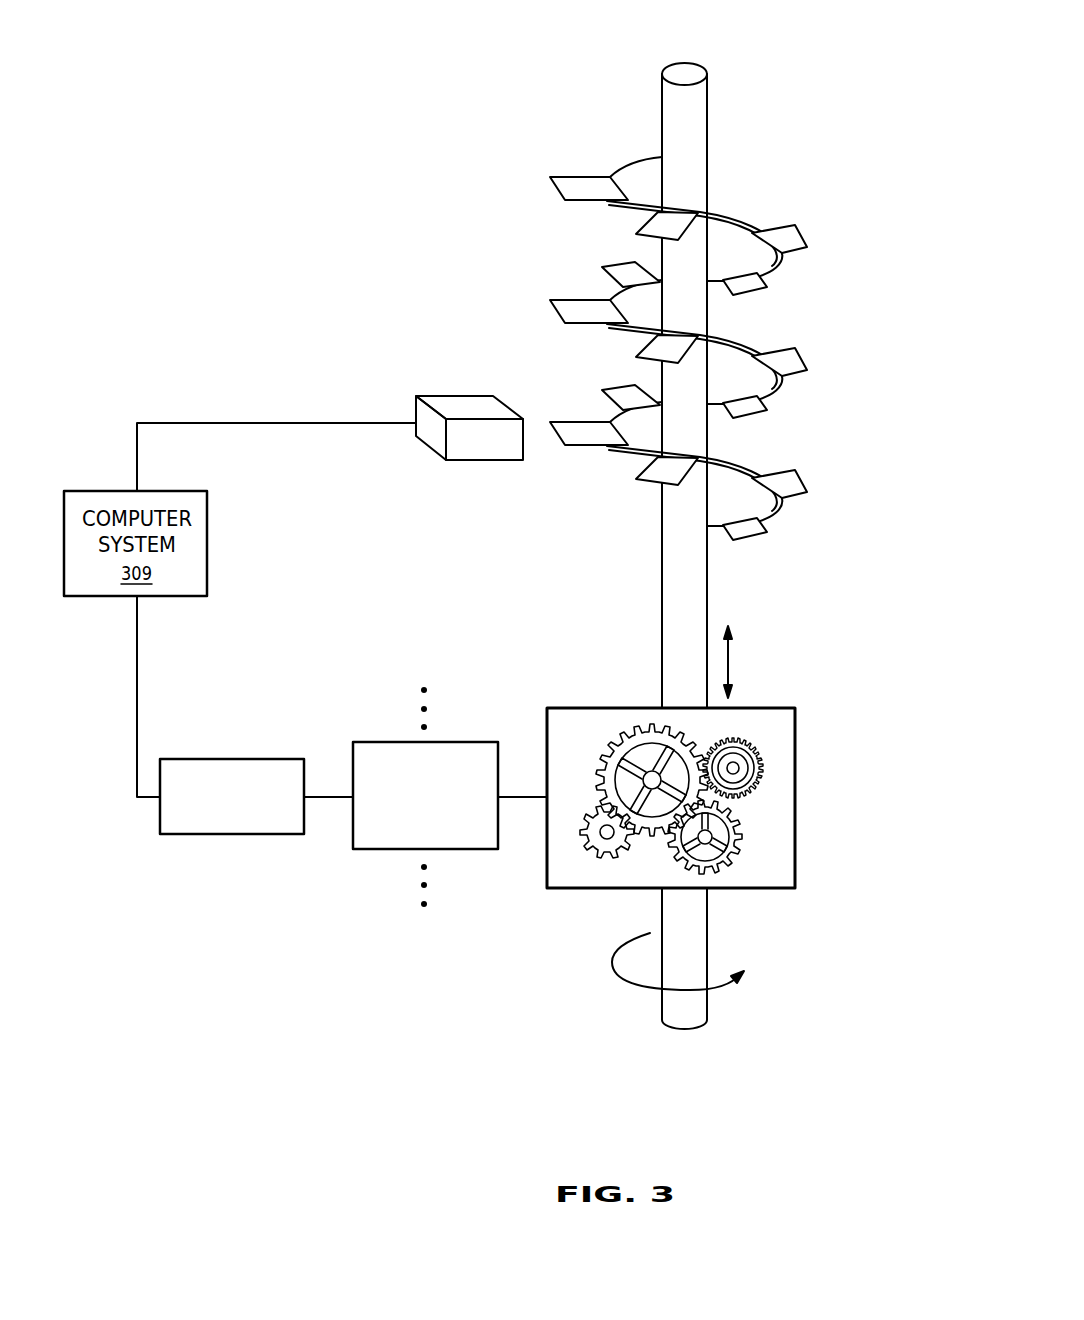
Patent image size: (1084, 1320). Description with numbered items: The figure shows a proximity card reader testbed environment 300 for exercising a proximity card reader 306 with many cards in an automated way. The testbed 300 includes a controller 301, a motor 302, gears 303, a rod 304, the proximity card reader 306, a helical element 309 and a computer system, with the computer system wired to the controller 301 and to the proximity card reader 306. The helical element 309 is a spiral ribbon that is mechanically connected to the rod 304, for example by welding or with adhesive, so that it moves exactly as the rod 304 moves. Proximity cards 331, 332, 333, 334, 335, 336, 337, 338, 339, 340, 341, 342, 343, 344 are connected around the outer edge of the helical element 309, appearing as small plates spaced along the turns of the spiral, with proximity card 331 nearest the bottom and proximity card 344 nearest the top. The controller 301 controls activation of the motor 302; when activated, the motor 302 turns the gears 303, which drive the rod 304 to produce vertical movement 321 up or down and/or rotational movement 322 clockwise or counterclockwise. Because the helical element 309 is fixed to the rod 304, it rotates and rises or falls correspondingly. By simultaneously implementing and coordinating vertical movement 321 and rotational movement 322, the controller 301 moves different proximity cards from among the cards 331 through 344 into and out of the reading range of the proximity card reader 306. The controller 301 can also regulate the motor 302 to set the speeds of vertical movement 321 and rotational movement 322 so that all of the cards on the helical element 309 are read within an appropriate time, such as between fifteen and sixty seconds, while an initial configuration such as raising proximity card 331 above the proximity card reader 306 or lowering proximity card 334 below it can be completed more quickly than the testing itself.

The proximity card reader testbed environment 300 is at (424, 48).
The controller 301 is at (248, 822).
The motor 302 is at (443, 822).
The gears 303 is at (797, 800).
The rod 304 is at (678, 610).
The proximity card reader 306 is at (437, 393).
The helical element 309 is at (727, 335).
The vertical movement 321 is at (733, 670).
The rotational movement 322 is at (717, 990).
The proximity card 331 is at (747, 527).
The proximity card 332 is at (797, 480).
The proximity card 333 is at (657, 477).
The proximity card 334 is at (562, 430).
The proximity card 335 is at (625, 390).
The proximity card 336 is at (745, 412).
The proximity card 337 is at (793, 362).
The proximity card 338 is at (667, 342).
The proximity card 339 is at (570, 307).
The proximity card 340 is at (625, 270).
The proximity card 341 is at (764, 277).
The proximity card 342 is at (790, 237).
The proximity card 343 is at (681, 228).
The proximity card 344 is at (563, 177).